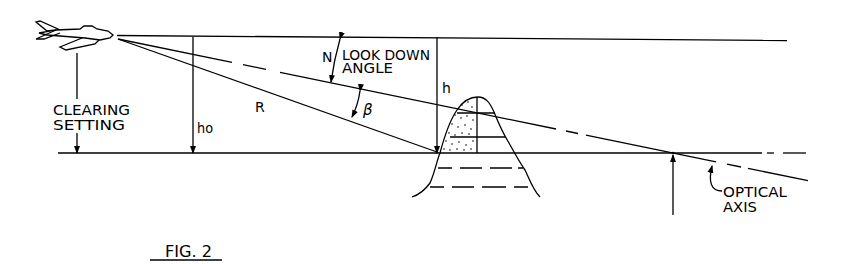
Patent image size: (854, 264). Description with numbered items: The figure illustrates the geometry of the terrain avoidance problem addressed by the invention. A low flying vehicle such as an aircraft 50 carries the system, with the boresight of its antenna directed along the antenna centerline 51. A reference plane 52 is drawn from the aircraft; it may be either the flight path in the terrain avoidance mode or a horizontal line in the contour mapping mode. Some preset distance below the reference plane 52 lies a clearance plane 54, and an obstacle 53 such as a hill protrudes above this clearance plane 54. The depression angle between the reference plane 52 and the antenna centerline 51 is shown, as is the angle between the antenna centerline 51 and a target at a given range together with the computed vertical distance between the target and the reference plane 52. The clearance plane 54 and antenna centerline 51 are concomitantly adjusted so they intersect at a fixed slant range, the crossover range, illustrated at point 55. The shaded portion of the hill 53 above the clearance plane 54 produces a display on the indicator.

The aircraft 50 is at (104, 28).
The antenna centerline 51 is at (231, 60).
The reference plane 52 is at (460, 37).
The obstacle 53 is at (481, 98).
The clearance plane 54 is at (283, 153).
The intersection point 55 is at (673, 153).